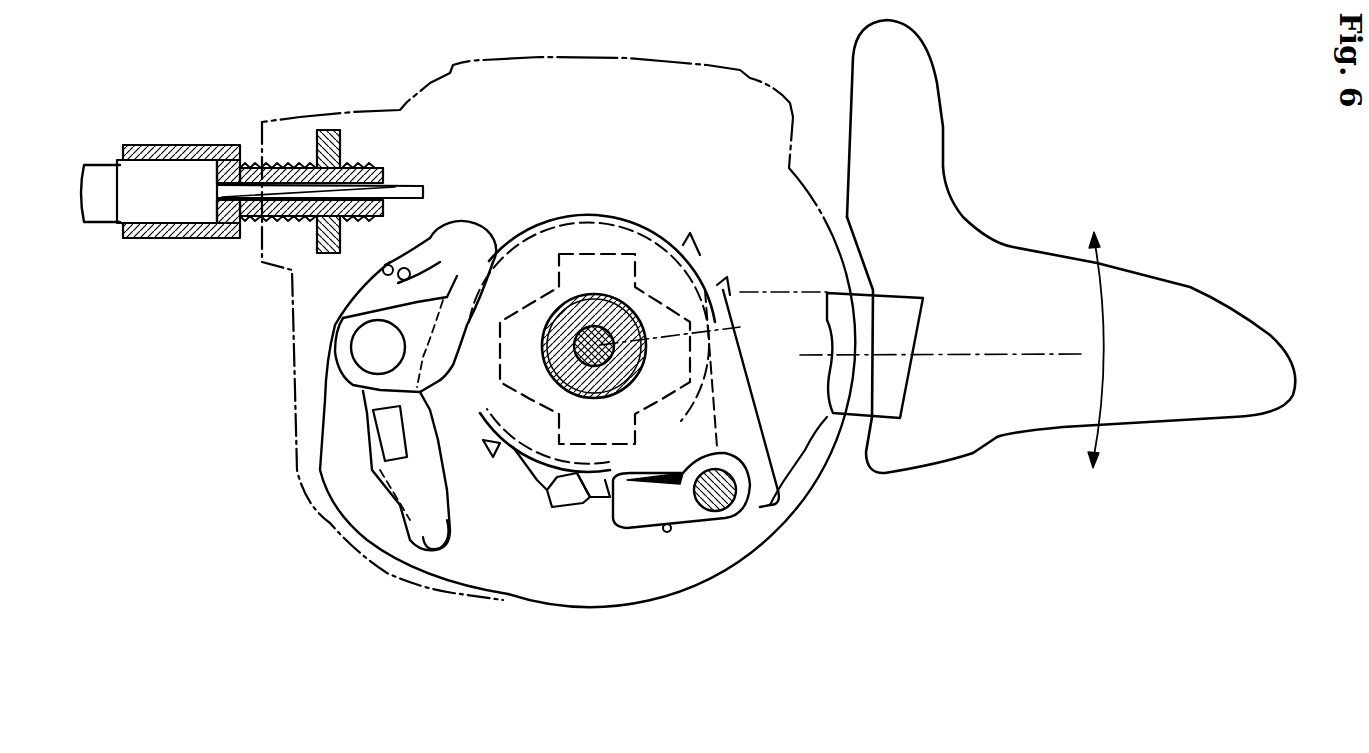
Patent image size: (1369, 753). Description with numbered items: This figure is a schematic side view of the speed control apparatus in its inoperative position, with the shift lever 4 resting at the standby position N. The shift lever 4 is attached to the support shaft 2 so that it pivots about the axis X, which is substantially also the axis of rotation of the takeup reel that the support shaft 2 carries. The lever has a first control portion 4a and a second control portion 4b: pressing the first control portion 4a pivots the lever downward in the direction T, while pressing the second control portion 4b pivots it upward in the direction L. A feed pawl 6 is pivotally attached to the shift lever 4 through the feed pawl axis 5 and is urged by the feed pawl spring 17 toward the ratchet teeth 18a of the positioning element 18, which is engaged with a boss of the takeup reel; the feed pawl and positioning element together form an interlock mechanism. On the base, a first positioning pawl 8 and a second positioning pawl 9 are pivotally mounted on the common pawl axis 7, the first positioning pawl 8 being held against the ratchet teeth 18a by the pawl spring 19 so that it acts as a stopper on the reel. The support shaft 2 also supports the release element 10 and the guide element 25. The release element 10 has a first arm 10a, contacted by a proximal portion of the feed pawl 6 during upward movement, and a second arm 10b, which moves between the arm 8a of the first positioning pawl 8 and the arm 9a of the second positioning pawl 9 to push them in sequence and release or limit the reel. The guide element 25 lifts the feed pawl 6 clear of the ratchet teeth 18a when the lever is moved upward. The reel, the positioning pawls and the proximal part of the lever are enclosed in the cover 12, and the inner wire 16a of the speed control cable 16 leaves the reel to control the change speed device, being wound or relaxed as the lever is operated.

The support shaft 2 is at (607, 300).
The shift lever 4 is at (945, 460).
The first control portion 4a is at (1198, 291).
The second control portion 4b is at (933, 77).
The feed pawl axis 5 is at (722, 502).
The feed pawl 6 is at (623, 527).
The pawl axis 7 is at (374, 348).
The first positioning pawl 8 is at (433, 233).
The arm of the first positioning pawl 8a is at (443, 533).
The second positioning pawl 9 is at (457, 253).
The arm of the second positioning pawl 9a is at (400, 520).
The release element 10 is at (537, 257).
The first arm of the release element 10a is at (780, 500).
The second arm of the release element 10b is at (380, 455).
The cover 12 is at (497, 600).
The speed control cable 16 is at (103, 220).
The inner wire 16a is at (407, 187).
The feed pawl spring 17 is at (668, 532).
The positioning element 18 is at (597, 213).
The ratchet teeth 18a is at (552, 507).
The pawl spring 19 is at (382, 272).
The guide element 25 is at (373, 390).
The axis X is at (740, 327).
The upward direction L is at (1092, 324).
The standby position N is at (957, 353).
The downward direction T is at (1087, 484).